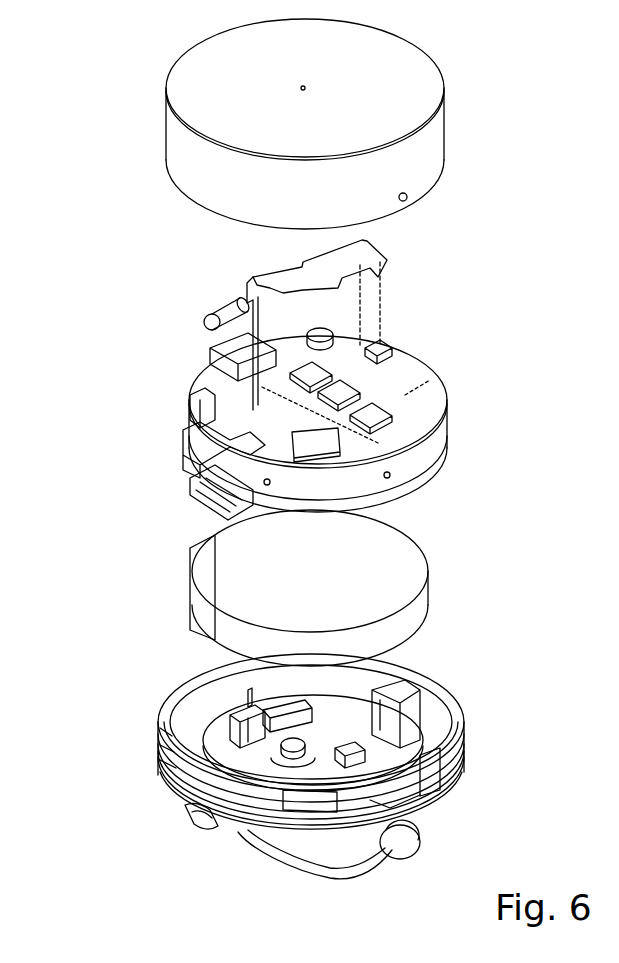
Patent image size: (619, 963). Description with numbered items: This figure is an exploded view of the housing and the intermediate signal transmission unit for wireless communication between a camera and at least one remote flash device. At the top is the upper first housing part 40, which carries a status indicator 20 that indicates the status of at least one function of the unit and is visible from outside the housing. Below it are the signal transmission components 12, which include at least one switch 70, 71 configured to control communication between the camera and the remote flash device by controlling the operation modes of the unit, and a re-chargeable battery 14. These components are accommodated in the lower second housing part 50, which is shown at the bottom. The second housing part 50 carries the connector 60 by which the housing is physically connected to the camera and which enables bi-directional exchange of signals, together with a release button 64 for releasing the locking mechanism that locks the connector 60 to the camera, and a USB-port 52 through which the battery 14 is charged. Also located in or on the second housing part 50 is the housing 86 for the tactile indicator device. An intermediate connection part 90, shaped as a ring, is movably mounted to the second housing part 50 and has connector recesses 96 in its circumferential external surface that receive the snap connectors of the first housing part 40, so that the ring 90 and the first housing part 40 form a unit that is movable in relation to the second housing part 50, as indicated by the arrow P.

The first housing part 40 is at (145, 58).
The status indicator 20 is at (303, 88).
The signal transmission components 12 is at (425, 348).
The switch 70 is at (322, 330).
The switch 71 is at (378, 348).
The re-chargeable battery 14 is at (398, 585).
The second housing part 50 is at (173, 668).
The arrow P is at (157, 688).
The housing for the indicator device 86 is at (247, 740).
The intermediate connection part 90 is at (427, 767).
The connector recesses 96 is at (163, 740).
The USB-port 52 is at (202, 817).
The connector 60 is at (288, 862).
The release button 64 is at (408, 852).